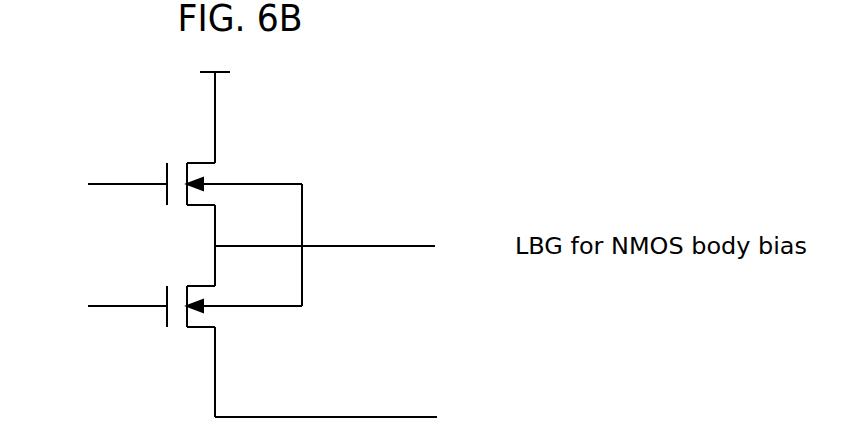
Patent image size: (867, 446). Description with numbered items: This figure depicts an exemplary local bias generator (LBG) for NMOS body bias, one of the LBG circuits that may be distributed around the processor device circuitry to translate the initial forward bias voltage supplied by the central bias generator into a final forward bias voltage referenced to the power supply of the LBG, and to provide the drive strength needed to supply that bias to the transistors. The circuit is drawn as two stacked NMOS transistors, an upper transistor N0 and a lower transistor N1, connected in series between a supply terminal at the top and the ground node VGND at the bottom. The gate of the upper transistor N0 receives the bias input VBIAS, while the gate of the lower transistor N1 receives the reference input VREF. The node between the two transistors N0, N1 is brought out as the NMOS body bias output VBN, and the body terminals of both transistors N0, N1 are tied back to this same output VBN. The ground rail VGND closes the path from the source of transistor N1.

The NMOS transistor N0 is at (234, 217).
The NMOS transistor N1 is at (234, 345).
The bias voltage input VBIAS is at (93, 187).
The reference voltage input VREF is at (102, 310).
The NMOS body bias output VBN is at (345, 249).
The ground voltage VGND is at (353, 417).